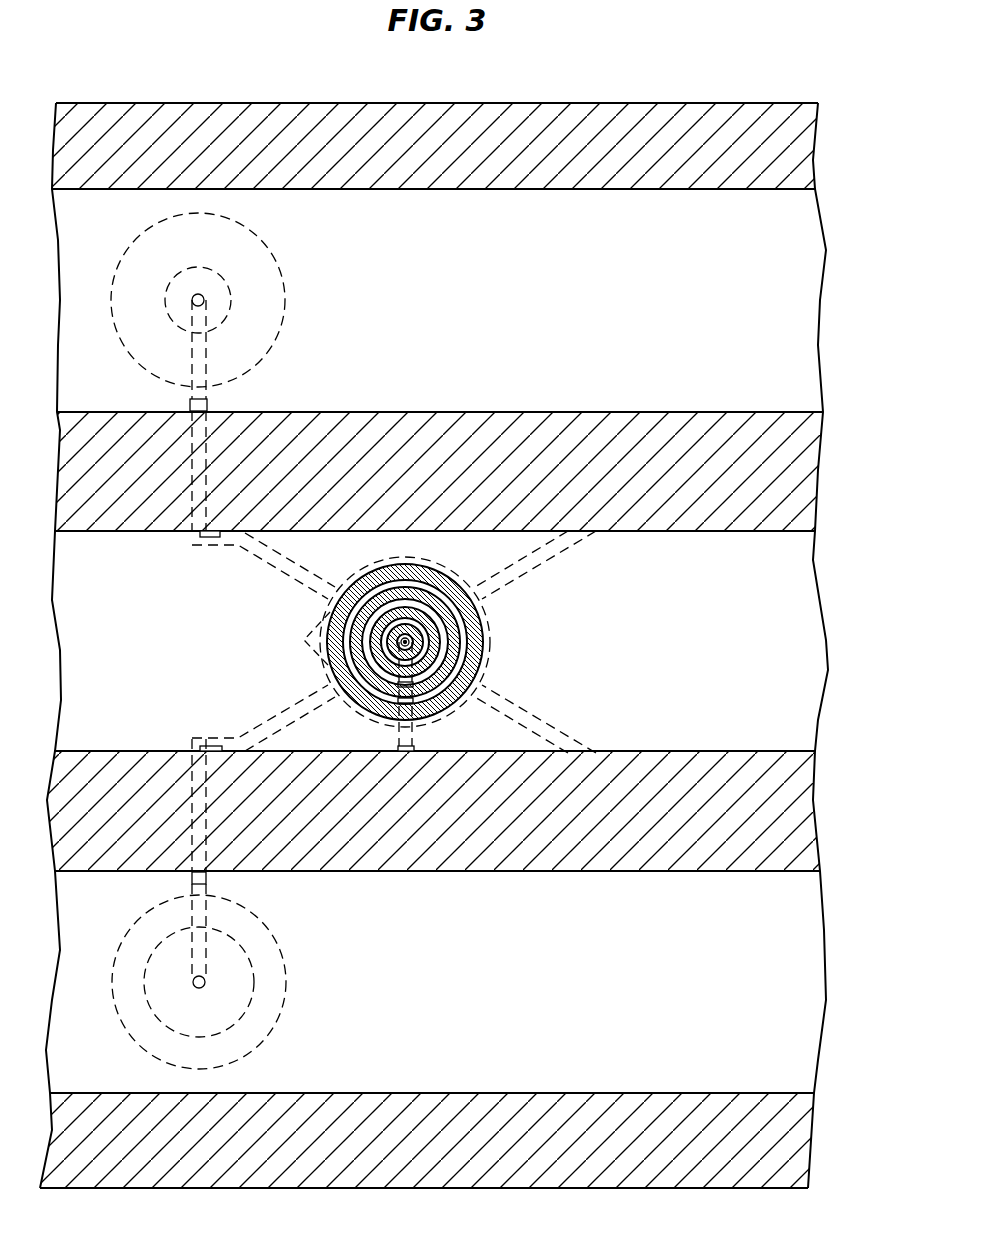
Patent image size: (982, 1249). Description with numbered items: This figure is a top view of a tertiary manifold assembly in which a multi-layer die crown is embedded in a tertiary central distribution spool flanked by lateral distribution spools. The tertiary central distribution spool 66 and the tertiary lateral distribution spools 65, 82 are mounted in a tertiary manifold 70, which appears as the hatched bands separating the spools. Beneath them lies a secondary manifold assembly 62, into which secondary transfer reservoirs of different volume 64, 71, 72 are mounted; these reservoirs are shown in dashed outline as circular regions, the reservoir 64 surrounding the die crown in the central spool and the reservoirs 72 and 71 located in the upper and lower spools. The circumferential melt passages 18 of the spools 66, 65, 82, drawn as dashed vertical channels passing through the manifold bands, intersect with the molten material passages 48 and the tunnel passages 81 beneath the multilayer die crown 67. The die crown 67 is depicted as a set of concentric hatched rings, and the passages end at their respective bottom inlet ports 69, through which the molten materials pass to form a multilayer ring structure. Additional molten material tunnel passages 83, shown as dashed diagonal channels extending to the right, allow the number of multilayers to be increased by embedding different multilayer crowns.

The circumferential melt passage 18 is at (192, 404).
The molten material passage 48 is at (226, 404).
The secondary manifold assembly 62 is at (794, 836).
The secondary transfer reservoir 64 is at (453, 560).
The tertiary lateral distribution spool 65 is at (727, 978).
The tertiary central distribution spool 66 is at (727, 658).
The multilayer die crown 67 is at (480, 647).
The bottom inlet port 69 is at (401, 630).
The tertiary manifold 70 is at (790, 776).
The secondary transfer reservoir 71 is at (208, 998).
The secondary transfer reservoir 72 is at (236, 309).
The tunnel passage 81 is at (452, 720).
The tertiary lateral distribution spool 82 is at (727, 297).
The additional molten material tunnel passage 83 is at (543, 575).